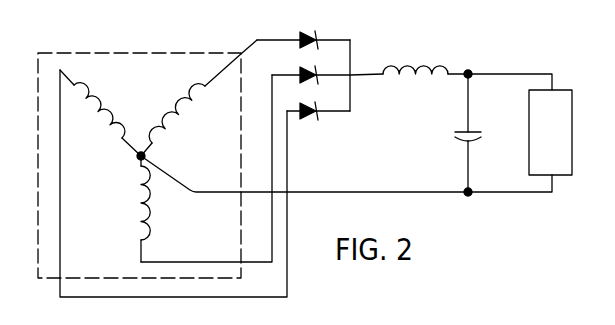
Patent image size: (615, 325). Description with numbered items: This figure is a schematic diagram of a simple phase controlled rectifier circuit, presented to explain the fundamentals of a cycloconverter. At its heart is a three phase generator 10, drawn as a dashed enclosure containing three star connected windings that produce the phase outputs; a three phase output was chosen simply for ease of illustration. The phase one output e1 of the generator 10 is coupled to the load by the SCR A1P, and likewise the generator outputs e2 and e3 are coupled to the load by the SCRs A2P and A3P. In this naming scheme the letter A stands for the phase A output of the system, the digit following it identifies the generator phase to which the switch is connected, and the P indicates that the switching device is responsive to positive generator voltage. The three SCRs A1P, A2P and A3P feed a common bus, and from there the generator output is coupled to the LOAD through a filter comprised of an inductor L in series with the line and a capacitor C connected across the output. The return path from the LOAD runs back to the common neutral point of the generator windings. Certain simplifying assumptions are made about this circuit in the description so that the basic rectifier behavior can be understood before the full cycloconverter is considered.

The three phase generator 10 is at (180, 53).
The phase one output e1 is at (199, 98).
The phase two output e2 is at (154, 211).
The phase three output e3 is at (100, 107).
The SCR A1P is at (325, 29).
The SCR A2P is at (341, 65).
The SCR A3P is at (325, 101).
The inductor L is at (415, 83).
The capacitor C is at (456, 133).
The load LOAD is at (550, 132).